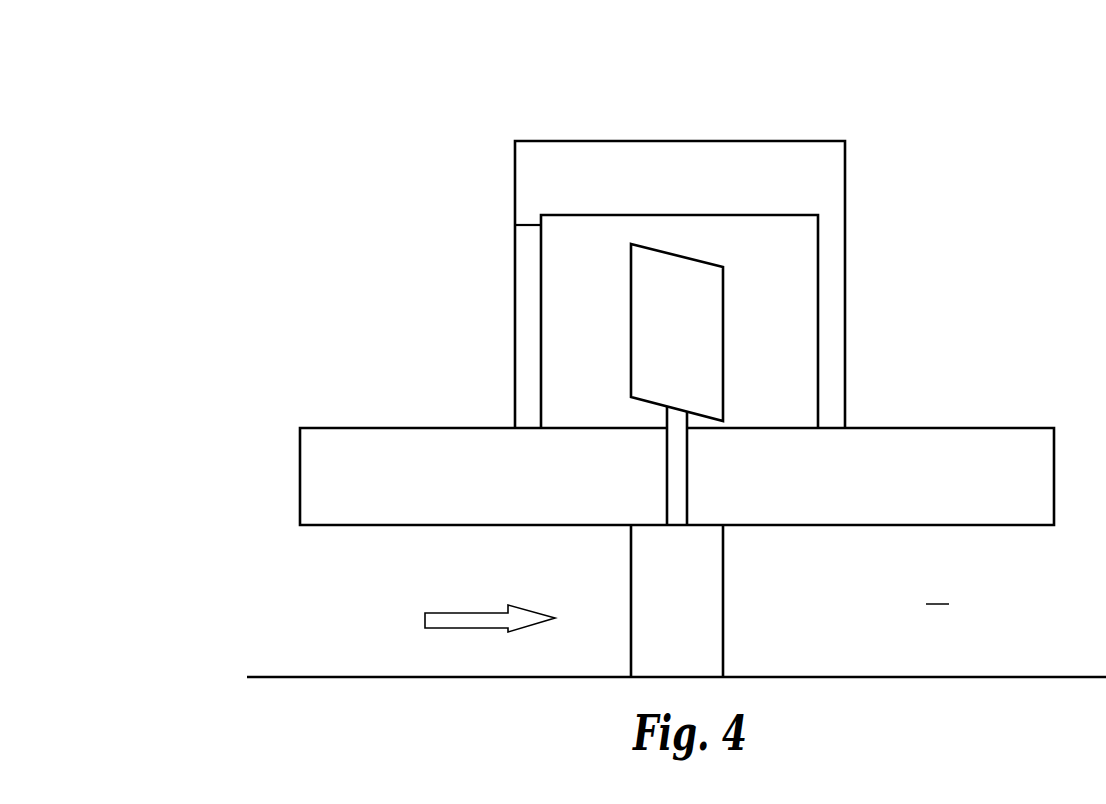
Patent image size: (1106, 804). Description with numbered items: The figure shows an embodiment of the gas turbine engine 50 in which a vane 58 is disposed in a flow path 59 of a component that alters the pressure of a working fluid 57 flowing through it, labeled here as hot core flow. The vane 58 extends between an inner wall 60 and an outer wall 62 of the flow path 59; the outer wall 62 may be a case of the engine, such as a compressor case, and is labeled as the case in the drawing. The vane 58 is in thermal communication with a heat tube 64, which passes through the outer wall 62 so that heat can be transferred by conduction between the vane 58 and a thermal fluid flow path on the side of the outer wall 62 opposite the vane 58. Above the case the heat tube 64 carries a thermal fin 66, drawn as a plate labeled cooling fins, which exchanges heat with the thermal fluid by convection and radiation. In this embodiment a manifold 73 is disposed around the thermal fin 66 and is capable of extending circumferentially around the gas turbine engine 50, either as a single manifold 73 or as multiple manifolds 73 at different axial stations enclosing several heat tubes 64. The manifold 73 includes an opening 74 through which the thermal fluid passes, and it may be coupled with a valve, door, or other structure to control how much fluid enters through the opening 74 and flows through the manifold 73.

The gas turbine engine 50 is at (856, 112).
The manifold 73 is at (846, 293).
The opening 74 is at (527, 214).
The thermal fin 66 is at (723, 320).
The heat tube 64 is at (665, 418).
The outer wall 62 is at (300, 473).
The vane 58 is at (723, 597).
The working fluid 57 is at (425, 627).
The flow path 59 is at (937, 591).
The inner wall 60 is at (873, 677).